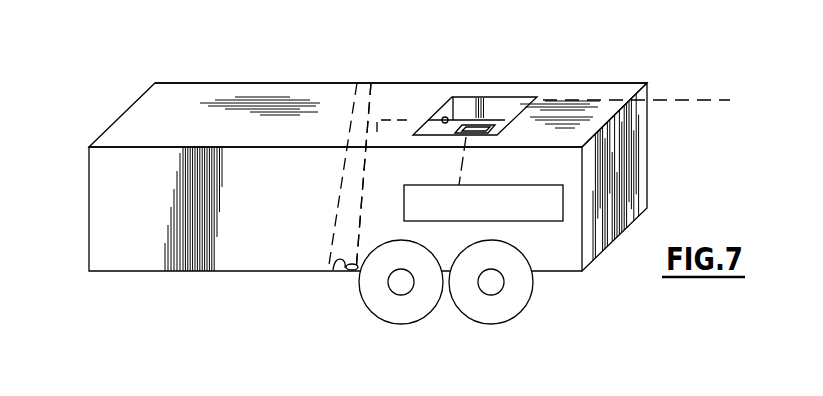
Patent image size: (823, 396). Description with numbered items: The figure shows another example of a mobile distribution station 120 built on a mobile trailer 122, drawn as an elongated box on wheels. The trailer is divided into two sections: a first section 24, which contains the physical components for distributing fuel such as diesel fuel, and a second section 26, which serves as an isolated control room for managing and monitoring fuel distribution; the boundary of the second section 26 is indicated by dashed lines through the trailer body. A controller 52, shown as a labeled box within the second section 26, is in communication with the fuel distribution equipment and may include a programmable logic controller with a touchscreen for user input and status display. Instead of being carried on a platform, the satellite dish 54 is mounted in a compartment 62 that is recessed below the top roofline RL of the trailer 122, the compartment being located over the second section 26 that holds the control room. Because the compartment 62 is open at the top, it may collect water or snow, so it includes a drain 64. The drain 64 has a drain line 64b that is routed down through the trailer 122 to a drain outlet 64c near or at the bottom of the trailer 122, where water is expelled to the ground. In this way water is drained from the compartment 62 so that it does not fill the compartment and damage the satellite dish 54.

The mobile distribution station 120 is at (150, 48).
The mobile trailer 122 is at (135, 252).
The first section 24 is at (322, 100).
The second section 26 is at (371, 83).
The compartment 62 is at (462, 98).
The satellite dish 54 is at (492, 118).
The drain 64 is at (444, 117).
The drain line 64b is at (360, 207).
The drain outlet 64c is at (333, 270).
The controller 52 is at (527, 221).
The top roofline RL is at (693, 100).